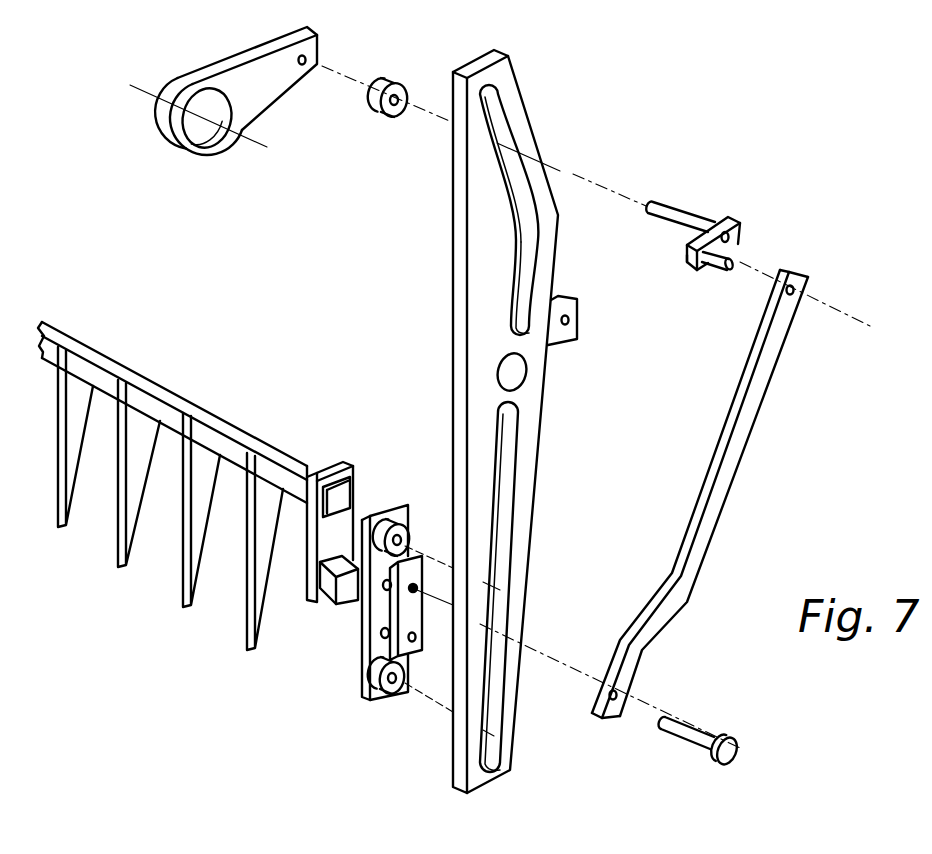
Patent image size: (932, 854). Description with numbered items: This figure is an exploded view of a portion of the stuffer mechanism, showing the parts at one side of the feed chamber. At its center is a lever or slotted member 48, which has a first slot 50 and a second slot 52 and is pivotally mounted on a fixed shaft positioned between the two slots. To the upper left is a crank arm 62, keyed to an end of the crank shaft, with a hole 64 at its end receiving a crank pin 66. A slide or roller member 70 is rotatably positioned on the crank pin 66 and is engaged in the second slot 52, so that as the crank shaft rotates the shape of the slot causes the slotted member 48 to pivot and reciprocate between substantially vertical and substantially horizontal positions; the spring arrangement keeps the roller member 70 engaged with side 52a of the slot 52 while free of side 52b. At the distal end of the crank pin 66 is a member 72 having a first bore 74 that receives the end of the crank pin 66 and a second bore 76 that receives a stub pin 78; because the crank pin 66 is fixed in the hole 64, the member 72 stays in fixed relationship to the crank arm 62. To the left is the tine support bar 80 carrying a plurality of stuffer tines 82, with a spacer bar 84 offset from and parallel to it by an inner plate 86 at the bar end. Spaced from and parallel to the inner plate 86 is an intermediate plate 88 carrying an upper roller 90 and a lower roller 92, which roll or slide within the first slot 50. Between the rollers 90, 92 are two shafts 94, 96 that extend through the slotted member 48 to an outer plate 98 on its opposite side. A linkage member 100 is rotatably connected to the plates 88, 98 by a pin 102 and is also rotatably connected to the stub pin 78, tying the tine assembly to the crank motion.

The slotted member 48 is at (510, 85).
The first slot 50 is at (505, 518).
The second slot 52 is at (529, 226).
The side of slot 52a is at (497, 152).
The side of slot 52b is at (500, 126).
The crank arm 62 is at (237, 73).
The hole 64 is at (306, 57).
The crank pin 66 is at (670, 207).
The roller member 70 is at (391, 82).
The member 72 is at (728, 216).
The first bore 74 is at (730, 233).
The second bore 76 is at (683, 266).
The stub pin 78 is at (733, 256).
The tine support bar 80 is at (178, 392).
The stuffer tines 82 is at (180, 597).
The spacer bar 84 is at (328, 603).
The inner plate 86 is at (348, 515).
The intermediate plate 88 is at (397, 515).
The upper roller 90 is at (398, 523).
The lower roller 92 is at (388, 690).
The shaft 94 is at (386, 589).
The shaft 96 is at (384, 637).
The outer plate 98 is at (424, 653).
The linkage member 100 is at (733, 455).
The pin 102 is at (692, 737).